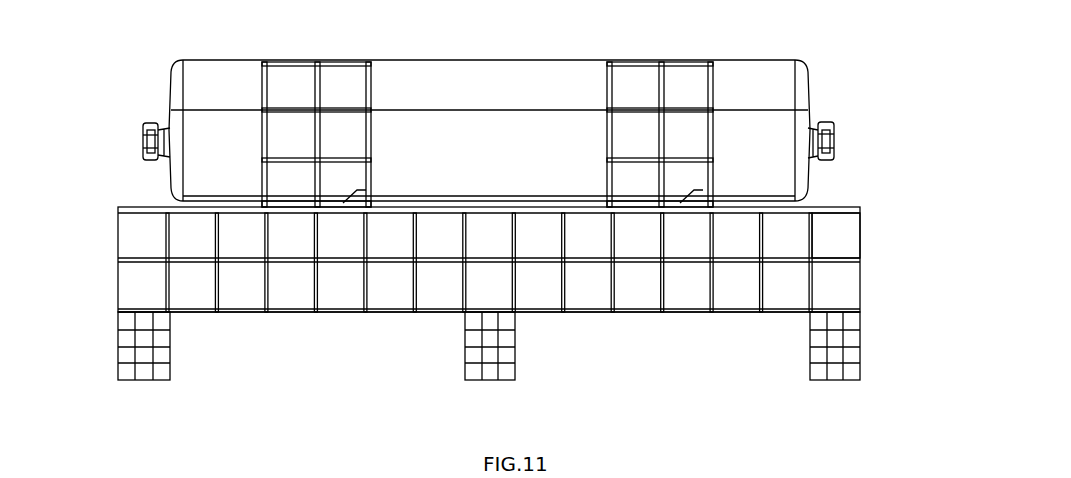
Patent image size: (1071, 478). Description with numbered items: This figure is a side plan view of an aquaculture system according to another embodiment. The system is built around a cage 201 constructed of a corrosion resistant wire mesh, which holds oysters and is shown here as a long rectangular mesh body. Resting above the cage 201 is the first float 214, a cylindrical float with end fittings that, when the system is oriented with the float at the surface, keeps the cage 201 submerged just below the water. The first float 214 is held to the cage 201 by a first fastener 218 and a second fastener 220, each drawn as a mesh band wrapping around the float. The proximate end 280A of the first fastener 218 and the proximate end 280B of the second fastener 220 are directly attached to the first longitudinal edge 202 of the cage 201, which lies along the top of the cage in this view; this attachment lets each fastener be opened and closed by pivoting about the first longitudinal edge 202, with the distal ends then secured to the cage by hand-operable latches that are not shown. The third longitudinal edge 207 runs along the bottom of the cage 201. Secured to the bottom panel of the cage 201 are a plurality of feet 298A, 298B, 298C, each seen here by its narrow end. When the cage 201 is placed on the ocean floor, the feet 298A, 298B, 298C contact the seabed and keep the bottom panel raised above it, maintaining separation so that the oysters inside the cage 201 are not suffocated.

The first float 214 is at (767, 50).
The first fastener 218 is at (292, 53).
The second fastener 220 is at (635, 52).
The proximate end of first fastener 280A is at (343, 202).
The proximate end of second fastener 280B is at (680, 203).
The first longitudinal edge 202 is at (828, 205).
The cage 201 is at (836, 250).
The third longitudinal edge 207 is at (585, 315).
The first foot 298A is at (117, 332).
The second foot 298B is at (462, 332).
The third foot 298C is at (808, 330).